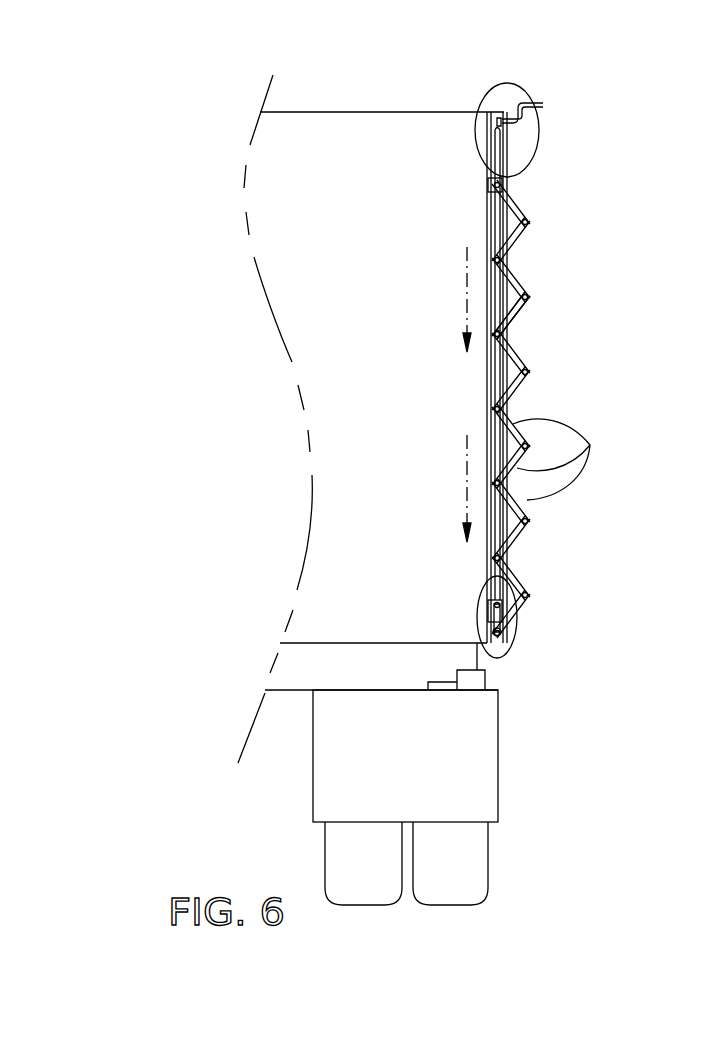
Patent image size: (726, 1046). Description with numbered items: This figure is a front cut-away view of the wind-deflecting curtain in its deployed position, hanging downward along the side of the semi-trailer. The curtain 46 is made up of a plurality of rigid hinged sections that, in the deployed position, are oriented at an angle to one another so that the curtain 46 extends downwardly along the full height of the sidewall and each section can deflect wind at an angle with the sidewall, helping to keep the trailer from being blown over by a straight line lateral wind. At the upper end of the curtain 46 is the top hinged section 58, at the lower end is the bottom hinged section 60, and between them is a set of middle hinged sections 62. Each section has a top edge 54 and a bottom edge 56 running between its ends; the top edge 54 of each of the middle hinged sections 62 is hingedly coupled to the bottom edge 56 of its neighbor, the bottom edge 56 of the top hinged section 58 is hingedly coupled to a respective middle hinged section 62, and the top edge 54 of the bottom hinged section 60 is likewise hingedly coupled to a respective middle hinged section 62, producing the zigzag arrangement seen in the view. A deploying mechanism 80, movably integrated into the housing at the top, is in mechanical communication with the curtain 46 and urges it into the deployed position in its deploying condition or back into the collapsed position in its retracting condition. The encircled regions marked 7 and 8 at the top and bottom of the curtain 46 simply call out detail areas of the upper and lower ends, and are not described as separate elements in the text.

The detail view circle of upper hook region 7 is at (539, 130).
The detail view circle of lower slider region 8 is at (518, 615).
The curtain 46 is at (538, 288).
The top edge 54 is at (497, 258).
The bottom edge 56 is at (527, 297).
The top hinged section 58 is at (513, 193).
The bottom hinged section 60 is at (518, 617).
The middle hinged sections 62 is at (575, 459).
The deploying mechanism 80 is at (526, 92).